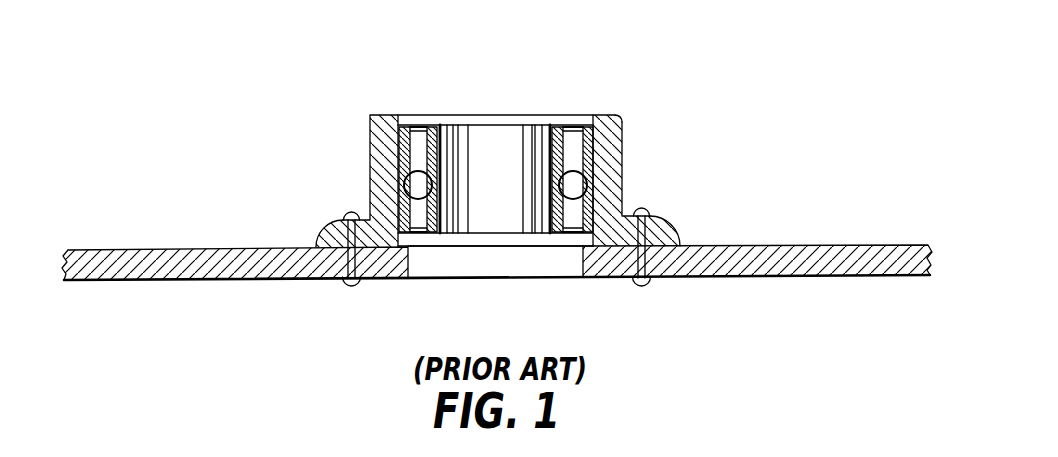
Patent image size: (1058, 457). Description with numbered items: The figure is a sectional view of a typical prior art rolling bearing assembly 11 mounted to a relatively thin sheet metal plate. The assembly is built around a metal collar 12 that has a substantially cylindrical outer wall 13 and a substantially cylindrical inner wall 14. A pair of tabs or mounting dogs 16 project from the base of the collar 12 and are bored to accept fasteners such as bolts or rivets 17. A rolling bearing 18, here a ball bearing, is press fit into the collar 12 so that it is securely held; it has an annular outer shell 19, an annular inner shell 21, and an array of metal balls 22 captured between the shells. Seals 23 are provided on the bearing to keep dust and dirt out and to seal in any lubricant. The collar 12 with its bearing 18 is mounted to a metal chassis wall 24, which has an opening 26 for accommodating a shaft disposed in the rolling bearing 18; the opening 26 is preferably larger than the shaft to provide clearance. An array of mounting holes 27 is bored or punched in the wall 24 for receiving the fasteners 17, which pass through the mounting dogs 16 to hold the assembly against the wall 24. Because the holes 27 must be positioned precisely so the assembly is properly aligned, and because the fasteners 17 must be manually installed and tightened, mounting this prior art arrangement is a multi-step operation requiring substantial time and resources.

The prior art assembly 11 is at (673, 67).
The metal collar 12 is at (650, 165).
The cylindrical outer wall 13 is at (623, 133).
The cylindrical inner wall 14 is at (420, 123).
The mounting dogs 16 is at (327, 232).
The rivets 17 is at (352, 211).
The rolling bearing 18 is at (515, 127).
The annular outer shell 19 is at (591, 110).
The annular inner shell 21 is at (475, 127).
The metal balls 22 is at (570, 187).
The seals 23 is at (580, 130).
The metal chassis wall 24 is at (825, 248).
The opening 26 is at (532, 262).
The mounting holes 27 is at (342, 267).